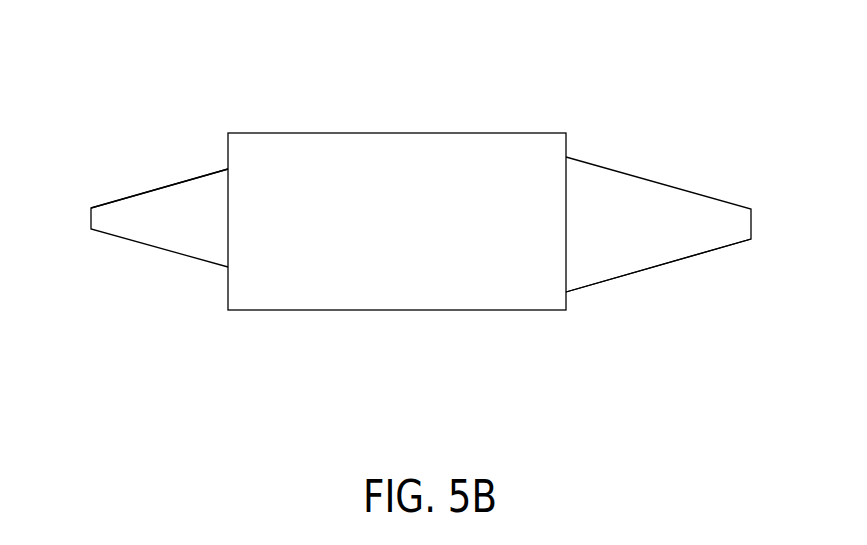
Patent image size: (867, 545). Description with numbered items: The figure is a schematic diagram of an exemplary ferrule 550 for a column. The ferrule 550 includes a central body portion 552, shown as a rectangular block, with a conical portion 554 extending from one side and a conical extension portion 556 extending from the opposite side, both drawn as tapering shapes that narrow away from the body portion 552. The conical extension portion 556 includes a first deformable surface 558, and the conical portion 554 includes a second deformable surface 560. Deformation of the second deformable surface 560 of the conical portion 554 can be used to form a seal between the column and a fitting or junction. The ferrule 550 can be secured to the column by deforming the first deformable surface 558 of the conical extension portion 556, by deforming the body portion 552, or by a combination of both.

The ferrule 550 is at (590, 97).
The body portion 552 is at (397, 222).
The conical portion 554 is at (644, 225).
The conical extension portion 556 is at (170, 217).
The first deformable surface 558 is at (170, 183).
The second deformable surface 560 is at (612, 280).